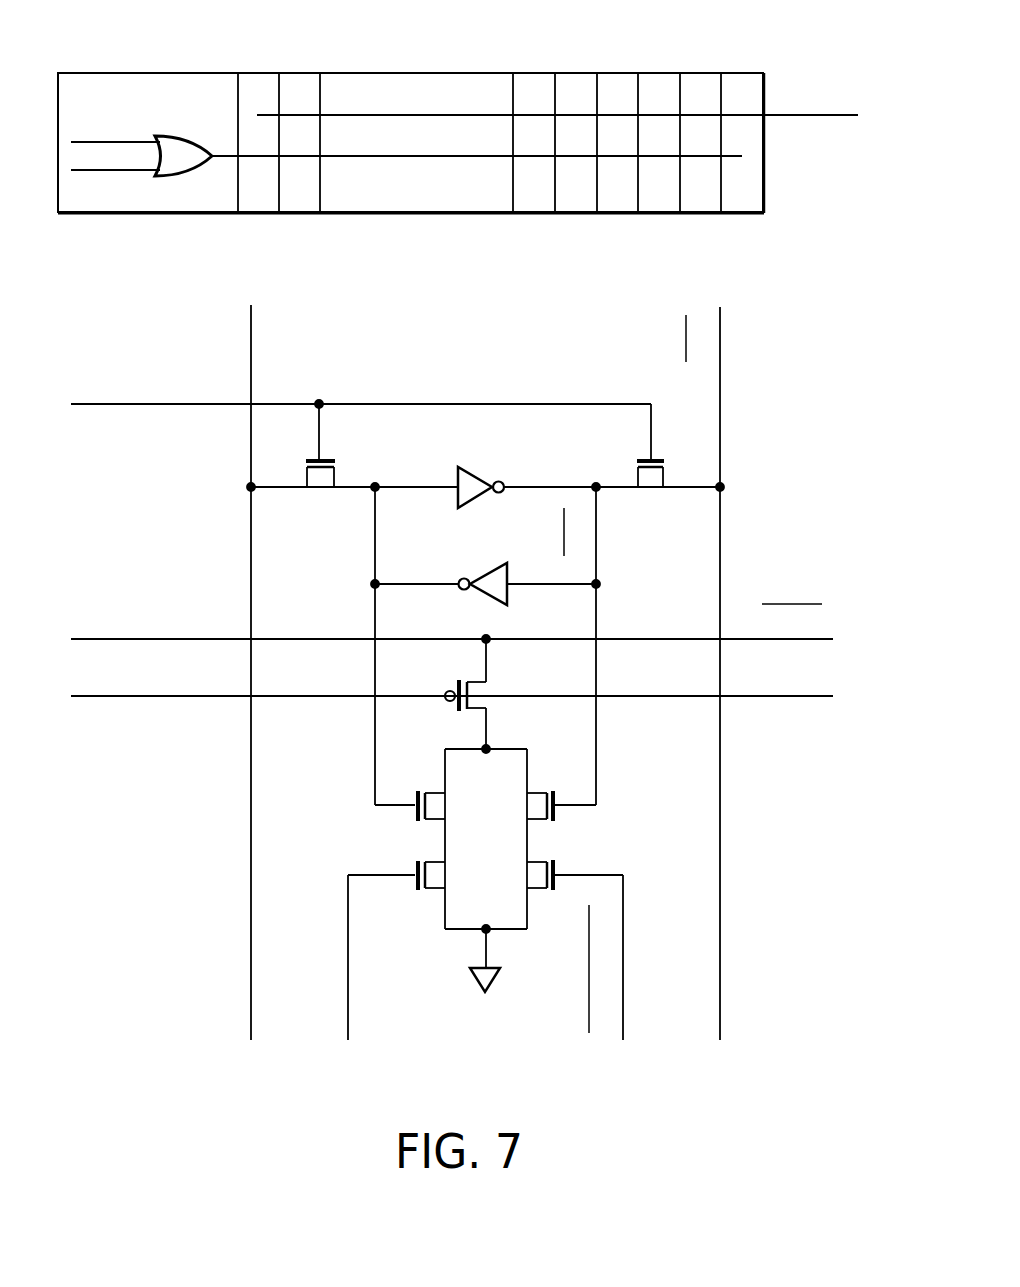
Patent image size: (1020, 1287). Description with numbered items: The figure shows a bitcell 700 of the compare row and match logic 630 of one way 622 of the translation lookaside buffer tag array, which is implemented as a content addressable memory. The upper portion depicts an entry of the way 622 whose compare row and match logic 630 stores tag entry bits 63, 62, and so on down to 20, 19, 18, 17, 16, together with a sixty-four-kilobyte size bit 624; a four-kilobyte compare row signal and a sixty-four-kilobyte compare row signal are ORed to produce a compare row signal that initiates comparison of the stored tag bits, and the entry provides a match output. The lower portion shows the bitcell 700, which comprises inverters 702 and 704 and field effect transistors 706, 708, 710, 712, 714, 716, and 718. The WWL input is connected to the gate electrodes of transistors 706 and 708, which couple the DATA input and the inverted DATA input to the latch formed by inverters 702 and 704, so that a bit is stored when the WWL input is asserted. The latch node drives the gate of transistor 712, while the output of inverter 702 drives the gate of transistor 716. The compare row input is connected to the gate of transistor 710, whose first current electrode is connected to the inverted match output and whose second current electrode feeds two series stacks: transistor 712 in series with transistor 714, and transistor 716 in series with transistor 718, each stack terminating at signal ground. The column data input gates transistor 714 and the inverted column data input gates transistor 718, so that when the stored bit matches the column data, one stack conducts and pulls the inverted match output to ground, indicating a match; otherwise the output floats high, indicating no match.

The CAM row / compare row block 622 is at (100, 73).
The compare row and match logic 630 is at (430, 73).
The 64K size bit 624 is at (748, 73).
The tag entry bit 63 is at (258, 127).
The tag entry bit 62 is at (304, 127).
The tag entry bit 20 is at (534, 127).
The tag entry bit 19 is at (581, 127).
The tag entry bit 18 is at (622, 127).
The tag entry bit 17 is at (664, 127).
The tag entry bit 16 is at (705, 127).
The bitcell 700 is at (298, 213).
The inverter 702 is at (475, 472).
The inverter 704 is at (493, 564).
The field effect transistor 706 is at (330, 457).
The field effect transistor 708 is at (662, 457).
The field effect transistor 710 is at (460, 678).
The field effect transistor 712 is at (418, 790).
The field effect transistor 714 is at (418, 891).
The field effect transistor 716 is at (543, 806).
The field effect transistor 718 is at (543, 876).